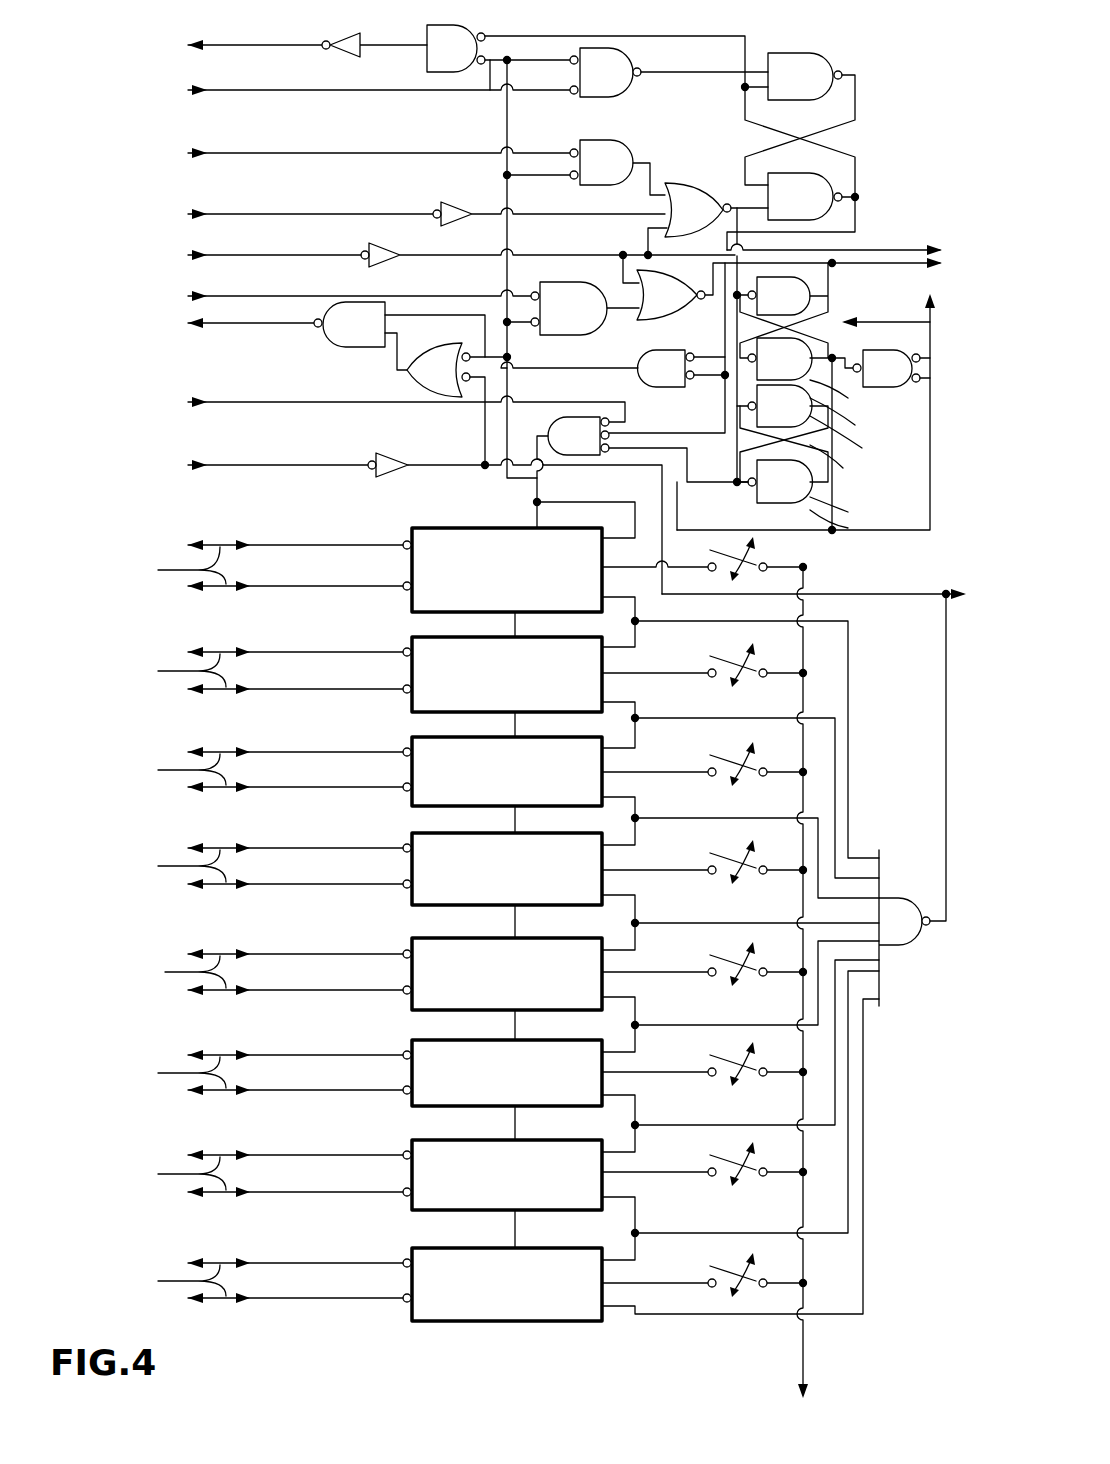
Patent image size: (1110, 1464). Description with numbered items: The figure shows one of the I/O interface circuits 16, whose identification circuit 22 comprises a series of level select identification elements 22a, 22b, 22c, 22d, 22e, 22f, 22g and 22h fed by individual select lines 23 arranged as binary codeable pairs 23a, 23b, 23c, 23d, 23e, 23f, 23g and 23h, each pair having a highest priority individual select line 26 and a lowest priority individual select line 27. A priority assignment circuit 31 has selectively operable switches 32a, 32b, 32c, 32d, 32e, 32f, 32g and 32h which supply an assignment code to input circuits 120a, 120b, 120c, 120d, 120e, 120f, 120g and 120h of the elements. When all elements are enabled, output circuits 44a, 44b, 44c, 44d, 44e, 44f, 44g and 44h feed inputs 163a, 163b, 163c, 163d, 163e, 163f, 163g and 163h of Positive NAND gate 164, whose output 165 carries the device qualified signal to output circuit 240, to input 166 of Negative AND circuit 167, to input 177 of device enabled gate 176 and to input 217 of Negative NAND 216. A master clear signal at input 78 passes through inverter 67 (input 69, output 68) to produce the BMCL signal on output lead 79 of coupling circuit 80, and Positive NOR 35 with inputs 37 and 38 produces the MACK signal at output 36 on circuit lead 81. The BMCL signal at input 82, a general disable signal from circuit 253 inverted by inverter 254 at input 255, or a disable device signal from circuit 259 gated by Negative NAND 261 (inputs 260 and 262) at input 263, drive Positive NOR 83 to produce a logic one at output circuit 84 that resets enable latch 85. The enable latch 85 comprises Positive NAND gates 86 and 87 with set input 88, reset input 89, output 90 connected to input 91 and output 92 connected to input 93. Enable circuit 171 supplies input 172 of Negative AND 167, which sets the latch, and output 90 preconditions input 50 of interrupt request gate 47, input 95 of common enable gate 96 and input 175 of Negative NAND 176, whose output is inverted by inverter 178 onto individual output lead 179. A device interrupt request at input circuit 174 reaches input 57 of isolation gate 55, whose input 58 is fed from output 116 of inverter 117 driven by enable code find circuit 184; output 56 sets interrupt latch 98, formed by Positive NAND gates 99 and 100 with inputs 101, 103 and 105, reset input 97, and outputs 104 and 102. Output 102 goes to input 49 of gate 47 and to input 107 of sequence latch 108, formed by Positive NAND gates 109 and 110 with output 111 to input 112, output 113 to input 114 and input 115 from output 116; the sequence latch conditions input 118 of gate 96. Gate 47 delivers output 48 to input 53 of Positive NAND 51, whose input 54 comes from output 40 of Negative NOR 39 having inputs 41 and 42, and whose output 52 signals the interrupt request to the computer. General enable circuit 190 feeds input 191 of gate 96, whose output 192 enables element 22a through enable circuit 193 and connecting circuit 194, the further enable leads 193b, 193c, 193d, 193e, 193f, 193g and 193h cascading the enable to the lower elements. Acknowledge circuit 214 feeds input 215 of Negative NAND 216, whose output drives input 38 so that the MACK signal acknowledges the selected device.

The I/O interface circuit 16 is at (880, 48).
The identification circuit 22 is at (445, 526).
The level select identification element 22a is at (412, 606).
The level select identification element 22b is at (412, 708).
The level select identification element 22c is at (412, 802).
The level select identification element 22d is at (412, 902).
The level select identification element 22e is at (412, 1008).
The level select identification element 22f is at (412, 1104).
The level select identification element 22g is at (412, 1208).
The level select identification element 22h is at (412, 1320).
The individual select lines 23 is at (268, 535).
The binary codeable pair of circuits 23a is at (167, 565).
The individual select line pair 23b is at (253, 670).
The individual select line pair 23c is at (253, 769).
The individual select line pair 23d is at (253, 866).
The individual select line pair 23e is at (259, 972).
The individual select line pair 23f is at (250, 1072).
The individual select line pair 23g is at (256, 1173).
The individual select line pair 23h is at (256, 1280).
The highest priority individual select line 26 is at (205, 543).
The lowest priority individual select line 27 is at (205, 590).
The priority assignment circuit 31 is at (732, 1350).
The selectively operable switch 32a is at (752, 568).
The selectively operable switch 32b is at (752, 664).
The selectively operable switch 32c is at (752, 763).
The selectively operable switch 32d is at (752, 861).
The selectively operable switch 32e is at (752, 963).
The selectively operable switch 32f is at (752, 1063).
The selectively operable switch 32g is at (752, 1163).
The selectively operable switch 32h is at (752, 1274).
The Positive NOR 35 is at (664, 287).
The output 36 is at (705, 276).
The input 37 is at (580, 254).
The input 38 is at (628, 310).
The Negative NOR circuit 39 is at (438, 370).
The output 40 is at (398, 376).
The input circuit 41 is at (472, 355).
The input 42 is at (485, 408).
The output circuit 44a is at (605, 597).
The output circuit 44b is at (618, 702).
The output circuit 44c is at (618, 797).
The output circuit 44d is at (618, 895).
The output circuit 44e is at (618, 997).
The output circuit 44f is at (618, 1095).
The output circuit 44g is at (618, 1197).
The output circuit 44h is at (650, 1320).
The interrupt request gate 47 is at (681, 368).
The output 48 is at (572, 368).
The input circuit 49 is at (712, 356).
The input circuit 50 is at (724, 383).
The interrupt request interlock 51 is at (349, 324).
The individual output 52 is at (284, 326).
The input 53 is at (408, 316).
The input 54 is at (393, 347).
The isolation gate 55 is at (886, 368).
The output 56 is at (850, 396).
The input 57 is at (932, 358).
The input 58 is at (932, 378).
The inverting circuit 67 is at (380, 262).
The output 68 is at (420, 252).
The input 69 is at (362, 255).
The input 78 is at (247, 255).
The output lead 79 is at (935, 247).
The coupling circuit 80 is at (935, 200).
The circuit lead 81 is at (935, 265).
The input 82 is at (648, 242).
The Positive NOR circuit 83 is at (708, 219).
The output circuit 84 is at (718, 195).
The enable latch 85 is at (820, 57).
The Positive NAND gate 86 is at (799, 119).
The Positive NAND gate 87 is at (793, 168).
The set input 88 is at (747, 58).
The reset input 89 is at (738, 345).
The output circuit 90 is at (857, 176).
The input 91 is at (758, 112).
The output 92 is at (842, 75).
The input 93 is at (762, 185).
The input 95 is at (632, 436).
The common enable gate 96 is at (572, 472).
The reset input 97 is at (822, 288).
The interrupt latch 98 is at (886, 311).
The Positive NAND gate 99 is at (796, 412).
The Positive NAND gate 100 is at (782, 310).
The input 101 is at (857, 414).
The output 102 is at (834, 242).
The input 103 is at (834, 349).
The output 104 is at (750, 386).
The input 105 is at (832, 313).
The input 107 is at (860, 434).
The sequence latch 108 is at (852, 483).
The Positive NAND gate 109 is at (782, 433).
The Positive NAND gate 110 is at (781, 454).
The output 111 is at (737, 446).
The input 112 is at (852, 500).
The output 113 is at (727, 488).
The input 114 is at (845, 457).
The input 115 is at (855, 517).
The output 116 is at (428, 465).
The inverter 117 is at (401, 455).
The input 118 is at (613, 448).
The input circuit 120a is at (690, 583).
The input circuit 120b is at (690, 645).
The input circuit 120c is at (690, 742).
The input circuit 120d is at (690, 842).
The input circuit 120e is at (690, 945).
The input circuit 120f is at (686, 1047).
The input circuit 120g is at (690, 1147).
The input lead 120h is at (690, 1255).
The input 163a is at (850, 830).
The input 163b is at (840, 860).
The input 163c is at (835, 895).
The input 163d is at (866, 920).
The input 163e is at (870, 945).
The input 163f is at (870, 966).
The input 163g is at (870, 975).
The input 163h is at (868, 1010).
The Positive NAND gate 164 is at (912, 800).
The output 165 is at (932, 925).
The input 166 is at (562, 60).
The Negative AND circuit 167 is at (669, 72).
The individual enable circuit 171 is at (270, 90).
The input 172 is at (558, 88).
The input circuit 174 is at (823, 410).
The input 175 is at (500, 36).
The device enabled gate 176 is at (456, 48).
The input 177 is at (490, 95).
The inverter 178 is at (346, 34).
The individual output lead 179 is at (207, 45).
The individual enable code find circuit 184 is at (250, 465).
The individual general enable circuit 190 is at (245, 403).
The input 191 is at (630, 408).
The output circuit 192 is at (528, 420).
The enable circuit 193 is at (534, 502).
The CE chain line 193b is at (515, 629).
The CE chain line 193c is at (515, 729).
The CE chain line 193d is at (515, 825).
The CE chain line 193e is at (515, 926).
The CE chain line 193f is at (515, 1030).
The CE chain line 193g is at (515, 1130).
The CE chain line 193h is at (515, 1236).
The connecting circuit 194 is at (606, 506).
The individual acknowledge circuit 214 is at (240, 297).
The input 215 is at (528, 295).
The Negative NAND circuit 216 is at (572, 308).
The input 217 is at (520, 326).
The output circuit 240 is at (938, 590).
The individual general disable circuit 253 is at (232, 214).
The inverter 254 is at (465, 206).
The input 255 is at (644, 213).
The individual disable device circuit 259 is at (232, 153).
The input 260 is at (540, 152).
The Negative NAND gate 261 is at (585, 167).
The input 262 is at (529, 200).
The input 263 is at (652, 165).